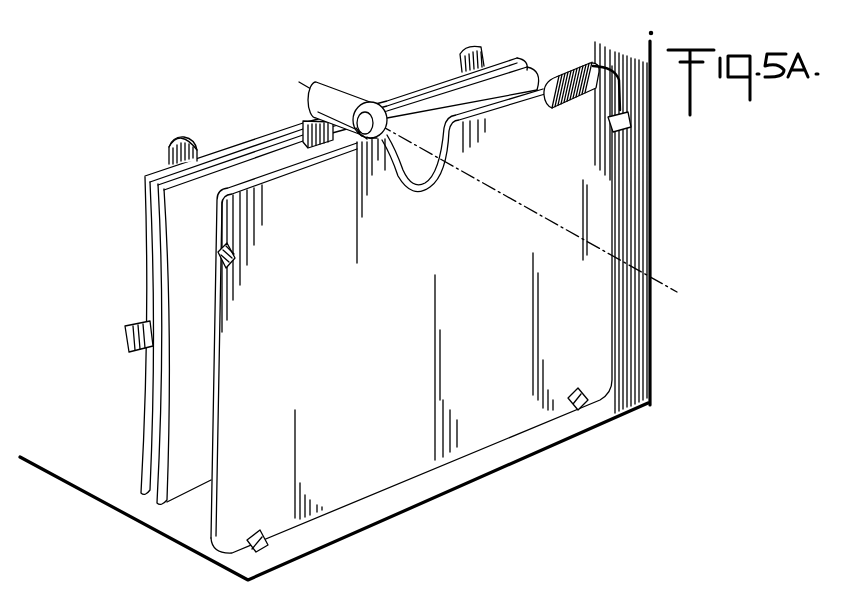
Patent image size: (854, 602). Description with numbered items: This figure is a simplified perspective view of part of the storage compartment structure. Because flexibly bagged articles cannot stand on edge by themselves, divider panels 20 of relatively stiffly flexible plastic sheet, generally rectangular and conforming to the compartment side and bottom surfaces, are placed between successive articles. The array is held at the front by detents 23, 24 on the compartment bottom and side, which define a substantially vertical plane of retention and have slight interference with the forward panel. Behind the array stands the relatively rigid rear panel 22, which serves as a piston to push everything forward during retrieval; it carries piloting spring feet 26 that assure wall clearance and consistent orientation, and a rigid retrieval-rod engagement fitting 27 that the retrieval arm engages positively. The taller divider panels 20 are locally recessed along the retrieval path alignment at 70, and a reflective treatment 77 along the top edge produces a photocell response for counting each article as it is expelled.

The divider panel 20 is at (314, 318).
The rear panel 22 is at (231, 170).
The detent 23 is at (256, 532).
The detent 24 is at (234, 250).
The piloting spring feet 26 is at (190, 136).
The retrieval-rod engagement fitting 27 is at (343, 93).
The local recess 70 is at (408, 180).
The reflective treatment 77 is at (562, 70).